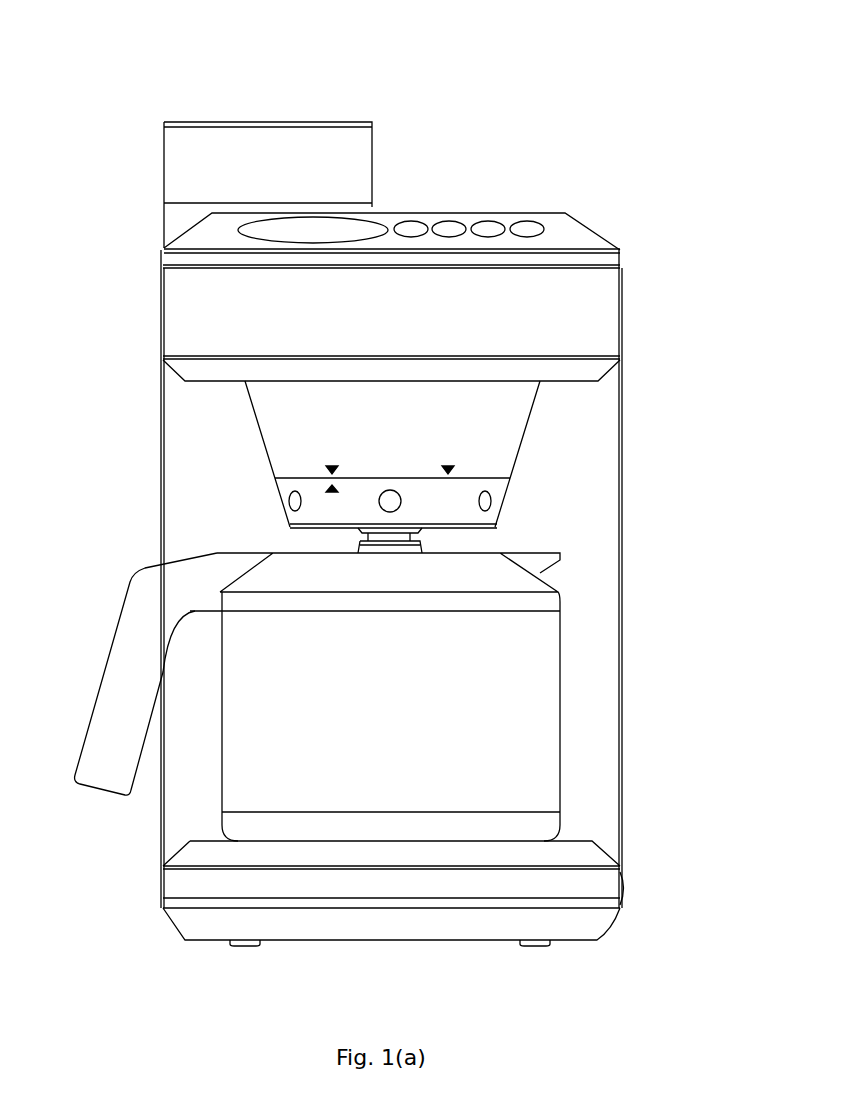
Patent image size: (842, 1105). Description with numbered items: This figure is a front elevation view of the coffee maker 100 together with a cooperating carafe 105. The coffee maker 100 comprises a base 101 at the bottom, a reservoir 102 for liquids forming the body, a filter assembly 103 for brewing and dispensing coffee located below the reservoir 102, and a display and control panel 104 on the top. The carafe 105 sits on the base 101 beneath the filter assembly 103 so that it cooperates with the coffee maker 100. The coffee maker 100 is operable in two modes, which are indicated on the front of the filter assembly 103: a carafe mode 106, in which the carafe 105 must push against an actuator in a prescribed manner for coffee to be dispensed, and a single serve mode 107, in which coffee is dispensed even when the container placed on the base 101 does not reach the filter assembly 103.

The coffee maker 100 is at (503, 103).
The base 101 is at (625, 872).
The reservoir 102 is at (625, 550).
The filter assembly 103 is at (537, 421).
The display and control panel 104 is at (580, 237).
The carafe 105 is at (560, 640).
The carafe mode 106 is at (290, 466).
The single serve mode 107 is at (452, 445).